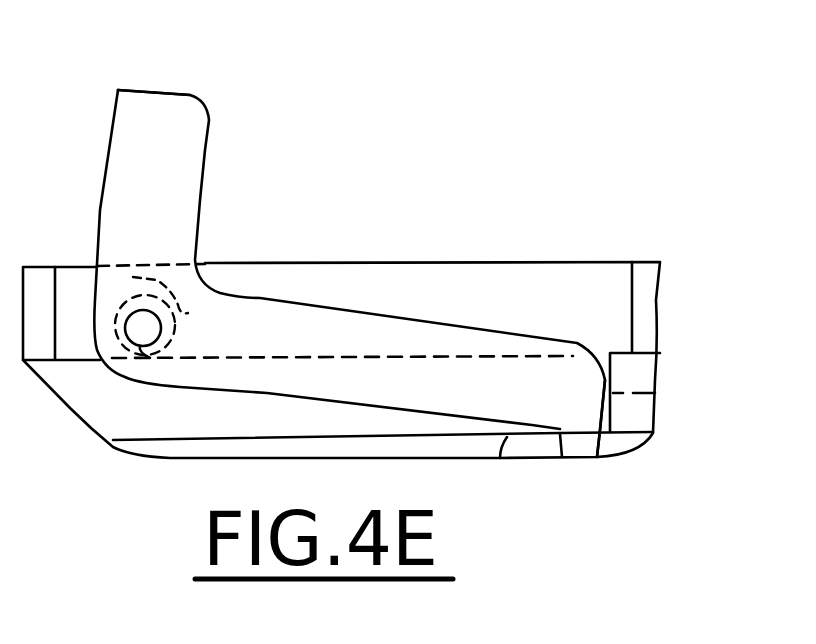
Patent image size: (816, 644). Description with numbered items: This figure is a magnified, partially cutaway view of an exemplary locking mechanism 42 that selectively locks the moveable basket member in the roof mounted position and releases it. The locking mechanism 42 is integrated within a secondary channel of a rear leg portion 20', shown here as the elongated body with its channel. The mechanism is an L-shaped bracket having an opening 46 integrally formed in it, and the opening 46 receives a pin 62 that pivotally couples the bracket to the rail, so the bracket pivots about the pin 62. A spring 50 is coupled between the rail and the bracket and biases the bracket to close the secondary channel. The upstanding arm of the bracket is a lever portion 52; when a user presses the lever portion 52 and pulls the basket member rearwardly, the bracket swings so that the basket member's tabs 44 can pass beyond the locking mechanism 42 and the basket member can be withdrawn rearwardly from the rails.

The rear leg portion 20' is at (388, 329).
The locking mechanism 42 is at (135, 75).
The tabs 44 is at (597, 457).
The opening 46 is at (153, 343).
The spring 50 is at (188, 313).
The lever portion 52 is at (207, 190).
The pin 62 is at (128, 340).